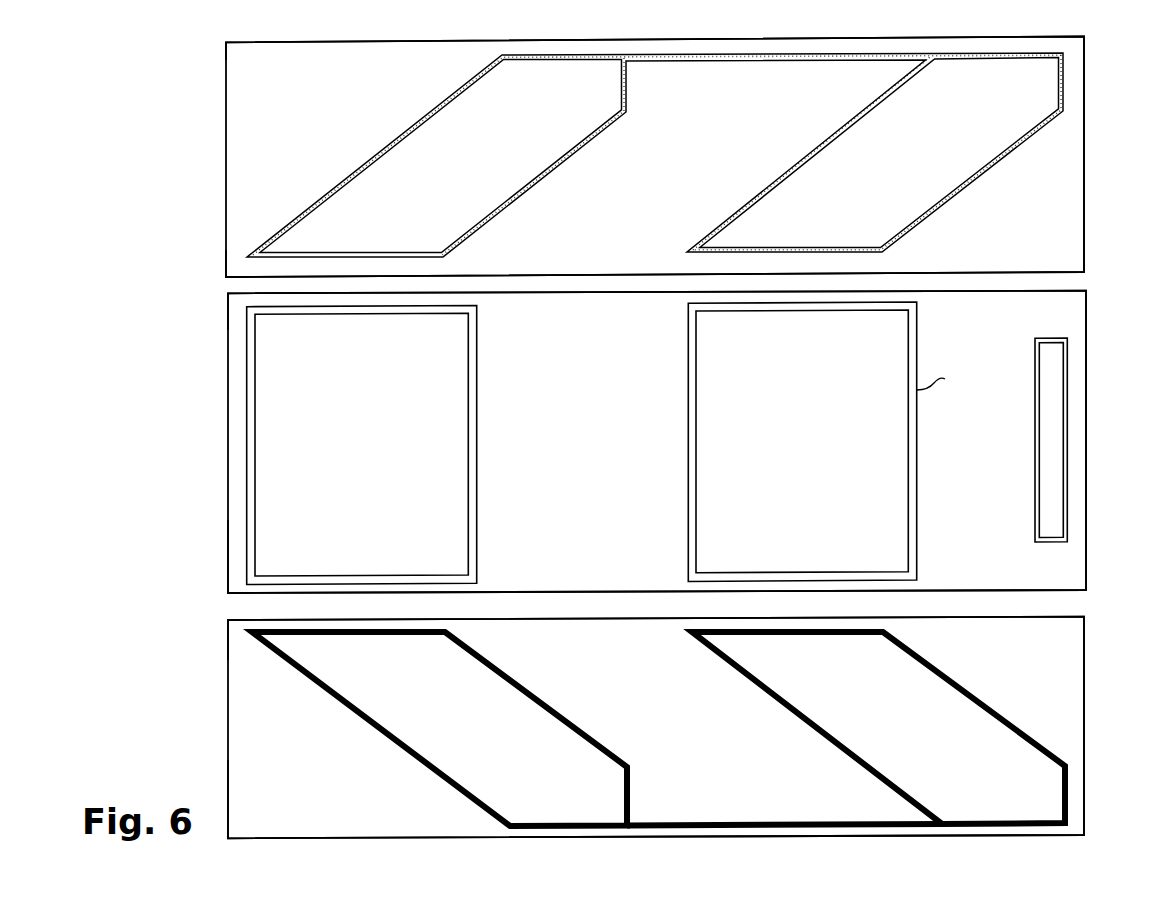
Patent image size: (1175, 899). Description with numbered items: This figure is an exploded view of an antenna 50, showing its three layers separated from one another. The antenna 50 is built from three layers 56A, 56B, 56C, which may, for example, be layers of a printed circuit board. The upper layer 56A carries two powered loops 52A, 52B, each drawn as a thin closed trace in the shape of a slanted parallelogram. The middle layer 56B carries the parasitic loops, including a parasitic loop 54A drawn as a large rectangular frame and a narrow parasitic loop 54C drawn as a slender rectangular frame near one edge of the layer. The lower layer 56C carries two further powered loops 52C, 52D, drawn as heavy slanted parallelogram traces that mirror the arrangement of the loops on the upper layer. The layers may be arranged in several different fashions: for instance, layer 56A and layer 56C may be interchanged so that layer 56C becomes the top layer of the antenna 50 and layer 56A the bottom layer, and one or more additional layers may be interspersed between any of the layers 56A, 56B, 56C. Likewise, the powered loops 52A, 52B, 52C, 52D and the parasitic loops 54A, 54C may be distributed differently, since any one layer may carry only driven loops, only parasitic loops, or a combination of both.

The antenna 50 is at (1096, 78).
The powered loop 52A is at (387, 145).
The powered loop 52B is at (807, 158).
The powered loop 52C is at (403, 752).
The powered loop 52D is at (830, 737).
The parasitic loop 54A is at (477, 467).
The parasitic loop 54C is at (1037, 500).
The layer 56A is at (226, 158).
The layer 56B is at (227, 447).
The layer 56C is at (228, 719).